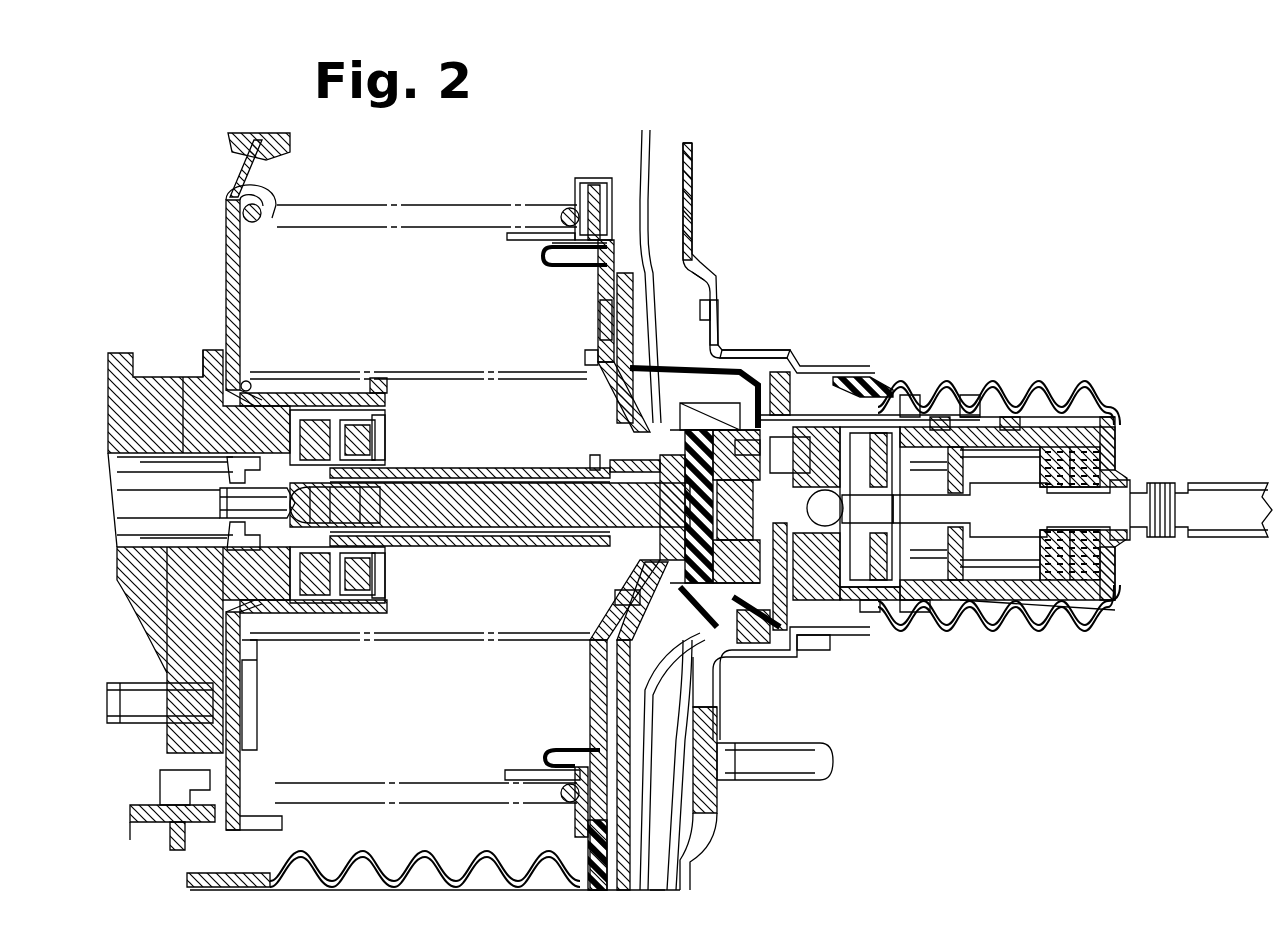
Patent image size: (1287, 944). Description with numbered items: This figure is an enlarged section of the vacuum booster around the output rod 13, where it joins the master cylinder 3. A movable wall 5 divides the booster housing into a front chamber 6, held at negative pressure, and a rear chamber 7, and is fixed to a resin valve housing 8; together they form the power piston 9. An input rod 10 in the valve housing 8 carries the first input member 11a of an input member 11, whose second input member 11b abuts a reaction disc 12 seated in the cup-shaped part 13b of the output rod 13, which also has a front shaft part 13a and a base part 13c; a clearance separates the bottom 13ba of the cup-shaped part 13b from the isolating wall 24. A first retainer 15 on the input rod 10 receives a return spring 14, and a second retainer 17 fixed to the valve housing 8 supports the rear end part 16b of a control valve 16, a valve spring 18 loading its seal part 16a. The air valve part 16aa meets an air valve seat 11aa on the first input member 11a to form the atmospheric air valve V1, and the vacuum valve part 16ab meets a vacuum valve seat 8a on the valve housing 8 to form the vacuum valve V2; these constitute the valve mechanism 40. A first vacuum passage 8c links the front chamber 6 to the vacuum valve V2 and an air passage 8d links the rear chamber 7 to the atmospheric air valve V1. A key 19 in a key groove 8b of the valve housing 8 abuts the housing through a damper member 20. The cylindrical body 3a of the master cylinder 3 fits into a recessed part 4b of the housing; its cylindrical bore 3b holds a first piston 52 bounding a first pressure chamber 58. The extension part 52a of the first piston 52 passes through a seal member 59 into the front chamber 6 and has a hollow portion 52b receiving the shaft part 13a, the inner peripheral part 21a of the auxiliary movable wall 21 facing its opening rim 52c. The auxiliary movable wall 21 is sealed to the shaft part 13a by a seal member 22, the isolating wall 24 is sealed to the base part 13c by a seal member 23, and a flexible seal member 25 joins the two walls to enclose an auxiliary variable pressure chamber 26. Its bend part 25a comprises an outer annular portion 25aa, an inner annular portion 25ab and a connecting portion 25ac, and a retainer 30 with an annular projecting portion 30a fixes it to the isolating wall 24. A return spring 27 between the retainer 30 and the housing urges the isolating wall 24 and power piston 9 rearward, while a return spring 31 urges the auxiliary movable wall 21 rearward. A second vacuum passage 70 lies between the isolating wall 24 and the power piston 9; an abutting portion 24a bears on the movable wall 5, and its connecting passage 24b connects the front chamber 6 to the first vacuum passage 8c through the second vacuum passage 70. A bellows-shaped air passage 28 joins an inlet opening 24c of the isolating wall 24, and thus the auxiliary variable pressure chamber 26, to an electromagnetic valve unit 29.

The master cylinder 3 is at (153, 378).
The cylindrical body 3a is at (175, 583).
The cylindrical bore 3b is at (190, 450).
The recessed part 4b is at (307, 397).
The movable wall 5 is at (655, 172).
The front chamber 6 is at (226, 250).
The rear chamber 7 is at (700, 815).
The valve housing 8 is at (1043, 440).
The vacuum valve seat 8a is at (800, 390).
The key groove 8b is at (745, 650).
The first vacuum passage 8c is at (690, 420).
The air passage 8d is at (867, 630).
The power piston 9 is at (662, 796).
The input rod 10 is at (1227, 500).
The input member 11 is at (713, 267).
The first input member 11a is at (760, 375).
The second input member 11b is at (745, 358).
The air valve seat 11aa is at (824, 683).
The reaction disc 12 is at (682, 650).
The output rod 13 is at (503, 527).
The shaft part 13a is at (490, 513).
The cup-shaped part 13b is at (633, 673).
The base part 13c is at (660, 520).
The bottom 13ba is at (745, 440).
The return spring 14 is at (1060, 387).
The first retainer 15 is at (1070, 463).
The control valve 16 is at (960, 640).
The seal part 16a is at (905, 410).
The rear end part 16b is at (970, 418).
The air valve part 16aa is at (870, 683).
The vacuum valve part 16ab is at (840, 393).
The second retainer 17 is at (1010, 418).
The valve spring 18 is at (940, 425).
The key 19 is at (790, 635).
The damper member 20 is at (827, 635).
The auxiliary movable wall 21 is at (633, 567).
The inner peripheral part 21a is at (640, 468).
The seal member 22 is at (607, 547).
The seal member 23 is at (620, 600).
The isolating wall 24 is at (628, 680).
The abutting portion 24a is at (608, 245).
The connecting passage 24b is at (608, 300).
The inlet opening 24c is at (598, 830).
The seal member 25 is at (693, 263).
The bend part 25a is at (540, 755).
The outer annular portion 25aa is at (560, 230).
The inner annular portion 25ab is at (573, 265).
The connecting portion 25ac is at (545, 258).
The auxiliary variable pressure chamber 26 is at (630, 410).
The return spring 27 is at (262, 210).
The air passage 28 is at (355, 880).
The electromagnetic valve unit 29 is at (140, 803).
The retainer 30 is at (593, 178).
The annular projecting portion 30a is at (513, 770).
The return spring 31 is at (247, 383).
The valve mechanism 40 is at (868, 615).
The first piston 52 is at (277, 590).
The extension part 52a is at (508, 462).
The hollow portion 52b is at (482, 467).
The opening rim 52c is at (600, 460).
The first pressure chamber 58 is at (160, 527).
The seal member 59 is at (388, 436).
The second vacuum passage 70 is at (700, 287).
The atmospheric air valve V1 is at (940, 720).
The vacuum valve V2 is at (790, 317).